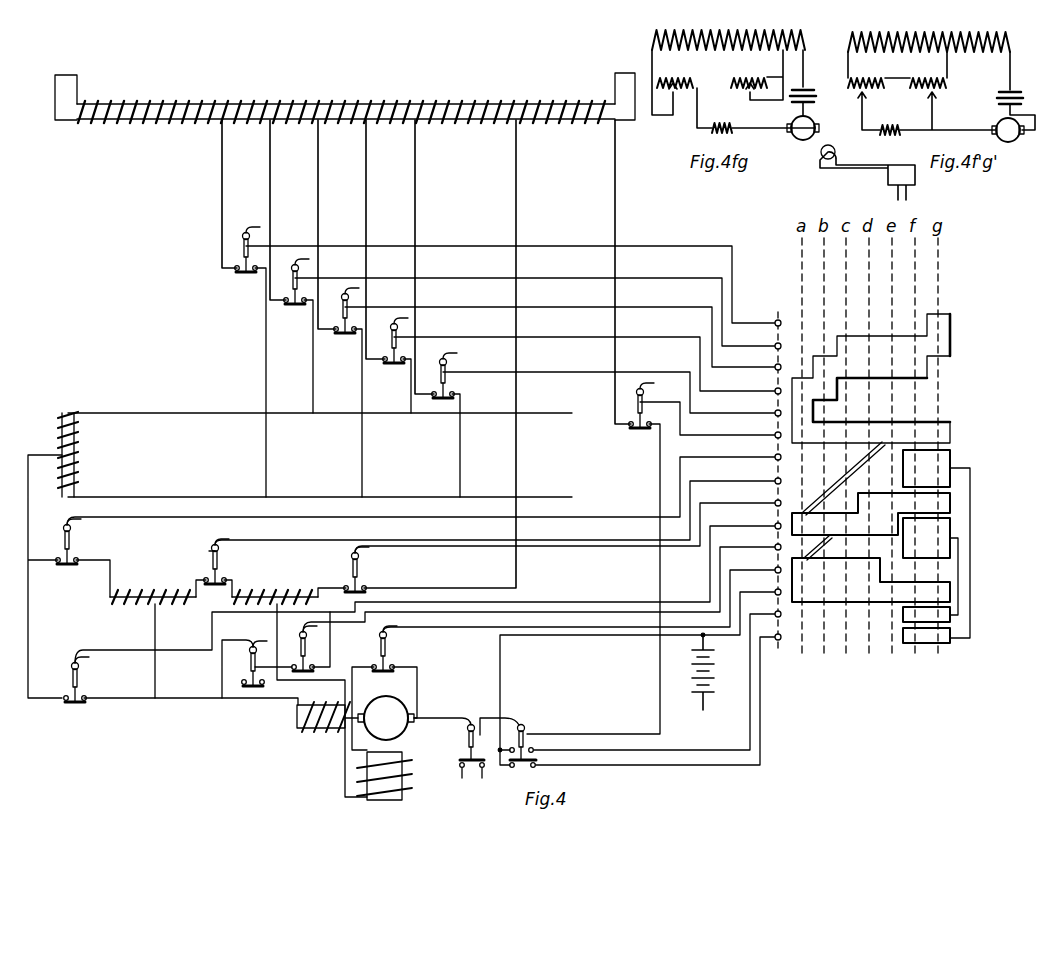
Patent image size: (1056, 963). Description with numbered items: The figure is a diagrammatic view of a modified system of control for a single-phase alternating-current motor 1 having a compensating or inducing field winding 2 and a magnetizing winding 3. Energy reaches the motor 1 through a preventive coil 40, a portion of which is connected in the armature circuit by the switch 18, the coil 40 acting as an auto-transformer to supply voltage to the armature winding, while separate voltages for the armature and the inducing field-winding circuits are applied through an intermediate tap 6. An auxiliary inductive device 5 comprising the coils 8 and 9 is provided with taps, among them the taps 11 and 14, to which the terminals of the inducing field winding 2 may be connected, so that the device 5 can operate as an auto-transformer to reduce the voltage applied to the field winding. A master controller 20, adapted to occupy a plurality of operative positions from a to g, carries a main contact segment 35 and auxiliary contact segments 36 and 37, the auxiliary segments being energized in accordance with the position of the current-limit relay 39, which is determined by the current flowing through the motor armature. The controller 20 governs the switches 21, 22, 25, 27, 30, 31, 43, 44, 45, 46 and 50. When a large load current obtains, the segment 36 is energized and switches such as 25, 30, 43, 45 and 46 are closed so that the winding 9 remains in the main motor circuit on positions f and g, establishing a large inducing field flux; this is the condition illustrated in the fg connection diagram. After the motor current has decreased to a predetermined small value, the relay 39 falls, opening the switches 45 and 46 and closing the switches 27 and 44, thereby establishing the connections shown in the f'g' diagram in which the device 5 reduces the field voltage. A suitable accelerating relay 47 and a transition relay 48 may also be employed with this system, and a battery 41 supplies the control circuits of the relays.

In FIG. 4, the motor 1 is at (432, 714).
In FIG. 4, the inducing field winding 2 is at (318, 730).
In FIG. 4, the magnetizing winding 3 is at (402, 772).
In FIG. 4, the auxiliary inductive device 5 is at (200, 549).
In FIG. 4, the intermediate tap 6 is at (516, 203).
In FIG. 4, the coil 8 is at (289, 584).
In FIG. 4, the coil 9 is at (158, 584).
In FIG. 4fg, the coil 9 is at (678, 75).
In FIG. 4, the tap 11 is at (155, 630).
In FIG. 4, the tap 14 is at (277, 630).
In FIG. 4, the switch 18 is at (563, 660).
In FIG. 4, the master controller 20 is at (902, 480).
In FIG. 4, the switch 21 is at (573, 365).
In FIG. 4, the switch 22 is at (603, 423).
In FIG. 4, the switch 25 is at (548, 392).
In FIG. 4, the switch 27 is at (489, 539).
In FIG. 4, the switch 30 is at (523, 336).
In FIG. 4, the switch 31 is at (503, 351).
In FIG. 4, the main contact segment 35 is at (950, 345).
In FIG. 4, the auxiliary contact segment 36 is at (950, 530).
In FIG. 4, the auxiliary contact segment 37 is at (950, 458).
In FIG. 4, the current-limit relay 39 is at (527, 724).
In FIG. 4, the preventive coil 40 is at (76, 455).
In FIG. 4, the battery 41 is at (714, 672).
In FIG. 4, the switch 43 is at (559, 547).
In FIG. 4, the switch 44 is at (415, 527).
In FIG. 4, the switch 45 is at (407, 615).
In FIG. 4, the switch 46 is at (526, 609).
In FIG. 4, the accelerating relay 47 is at (468, 736).
In FIG. 4, the transition relay 48 is at (257, 669).
In FIG. 4, the switch 50 is at (651, 558).